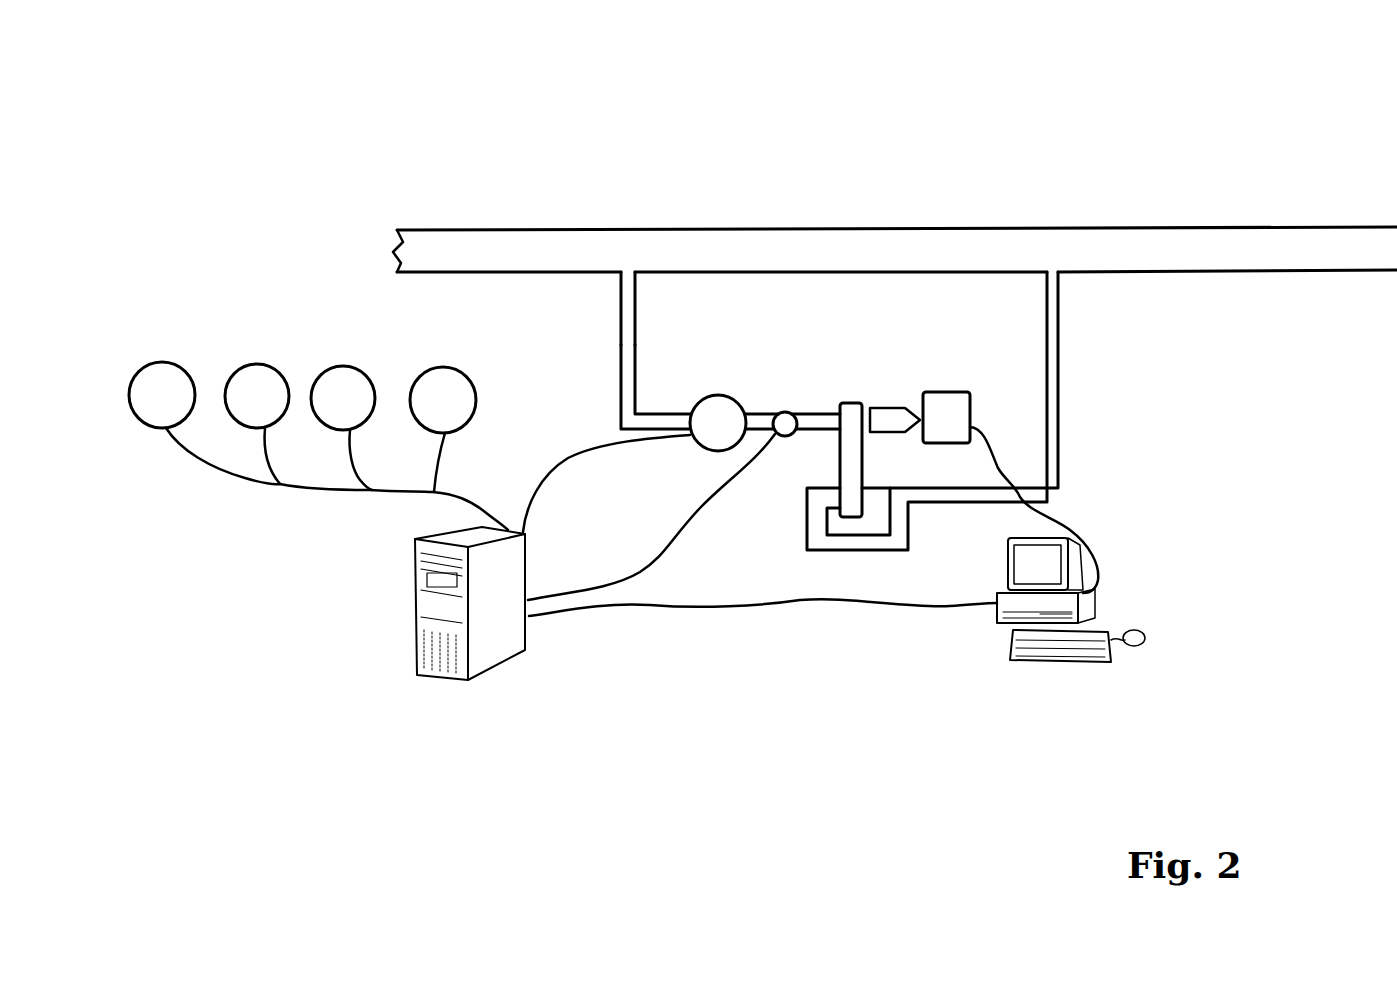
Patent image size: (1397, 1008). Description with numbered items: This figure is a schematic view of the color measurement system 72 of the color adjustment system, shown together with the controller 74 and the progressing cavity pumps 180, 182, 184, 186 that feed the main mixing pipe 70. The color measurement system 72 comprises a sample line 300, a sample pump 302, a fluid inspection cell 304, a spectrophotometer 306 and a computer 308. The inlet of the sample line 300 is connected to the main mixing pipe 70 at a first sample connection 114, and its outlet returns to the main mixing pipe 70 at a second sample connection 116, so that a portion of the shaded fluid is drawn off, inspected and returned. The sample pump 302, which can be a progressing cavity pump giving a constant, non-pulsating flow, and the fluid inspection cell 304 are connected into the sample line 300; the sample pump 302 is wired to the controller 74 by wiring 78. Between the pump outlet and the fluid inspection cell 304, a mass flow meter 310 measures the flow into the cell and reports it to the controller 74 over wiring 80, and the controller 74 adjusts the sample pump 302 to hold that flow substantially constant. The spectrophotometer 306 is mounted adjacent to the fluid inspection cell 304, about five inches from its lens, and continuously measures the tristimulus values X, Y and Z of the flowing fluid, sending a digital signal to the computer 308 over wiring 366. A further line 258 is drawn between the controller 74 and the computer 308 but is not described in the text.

The main mixing pipe 70 is at (1130, 227).
The color measurement system 72 is at (1203, 656).
The controller 74 is at (503, 592).
The wiring 78 is at (560, 463).
The wiring 80 is at (657, 557).
The first sample connection 114 is at (626, 272).
The second sample connection 116 is at (1051, 272).
The progressing cavity pump 180 is at (152, 380).
The progressing cavity pump 182 is at (267, 393).
The progressing cavity pump 184 is at (342, 402).
The progressing cavity pump 186 is at (443, 397).
The communication line 258 is at (715, 617).
The sample line 300 is at (640, 358).
The sample pump 302 is at (712, 432).
The fluid inspection cell 304 is at (846, 412).
The spectrophotometer 306 is at (938, 420).
The computer 308 is at (1000, 610).
The mass flow meter 310 is at (780, 440).
The wiring 366 is at (1036, 622).